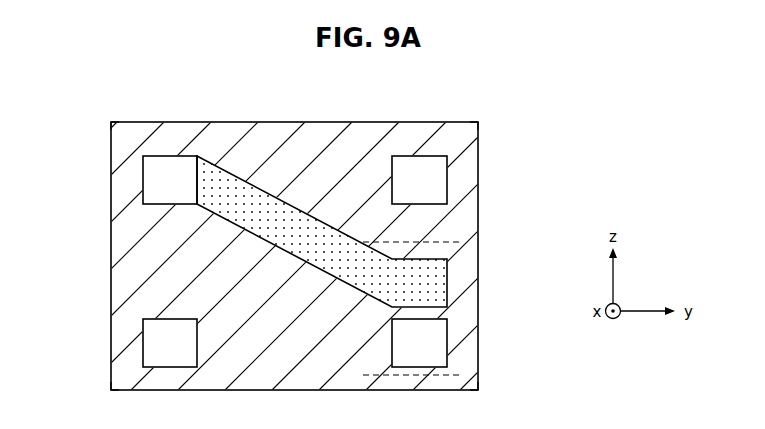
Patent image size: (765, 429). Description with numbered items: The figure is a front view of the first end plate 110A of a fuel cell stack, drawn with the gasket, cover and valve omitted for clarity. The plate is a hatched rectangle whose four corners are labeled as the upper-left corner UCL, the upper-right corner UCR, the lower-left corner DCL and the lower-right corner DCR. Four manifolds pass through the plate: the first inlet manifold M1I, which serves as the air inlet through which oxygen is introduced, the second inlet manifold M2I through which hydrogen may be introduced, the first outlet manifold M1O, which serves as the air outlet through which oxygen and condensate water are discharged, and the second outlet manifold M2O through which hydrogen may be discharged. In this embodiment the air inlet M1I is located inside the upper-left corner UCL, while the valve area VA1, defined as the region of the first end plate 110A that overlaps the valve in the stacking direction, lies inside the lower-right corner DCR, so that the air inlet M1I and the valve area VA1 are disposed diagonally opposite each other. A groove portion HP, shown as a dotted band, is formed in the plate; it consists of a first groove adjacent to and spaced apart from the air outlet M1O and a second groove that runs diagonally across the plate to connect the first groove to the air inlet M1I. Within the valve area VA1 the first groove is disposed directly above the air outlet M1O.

The first end plate 110A is at (473, 202).
The groove portion HP is at (284, 220).
The first inlet manifold M1I is at (178, 183).
The second inlet manifold M2I is at (424, 183).
The first outlet manifold M1O is at (426, 330).
The second outlet manifold M2O is at (178, 330).
The valve area VA1 is at (460, 283).
The upper-left corner UCL is at (111, 122).
The upper-right corner UCR is at (479, 122).
The lower-left corner DCL is at (111, 390).
The lower-right corner DCR is at (479, 390).